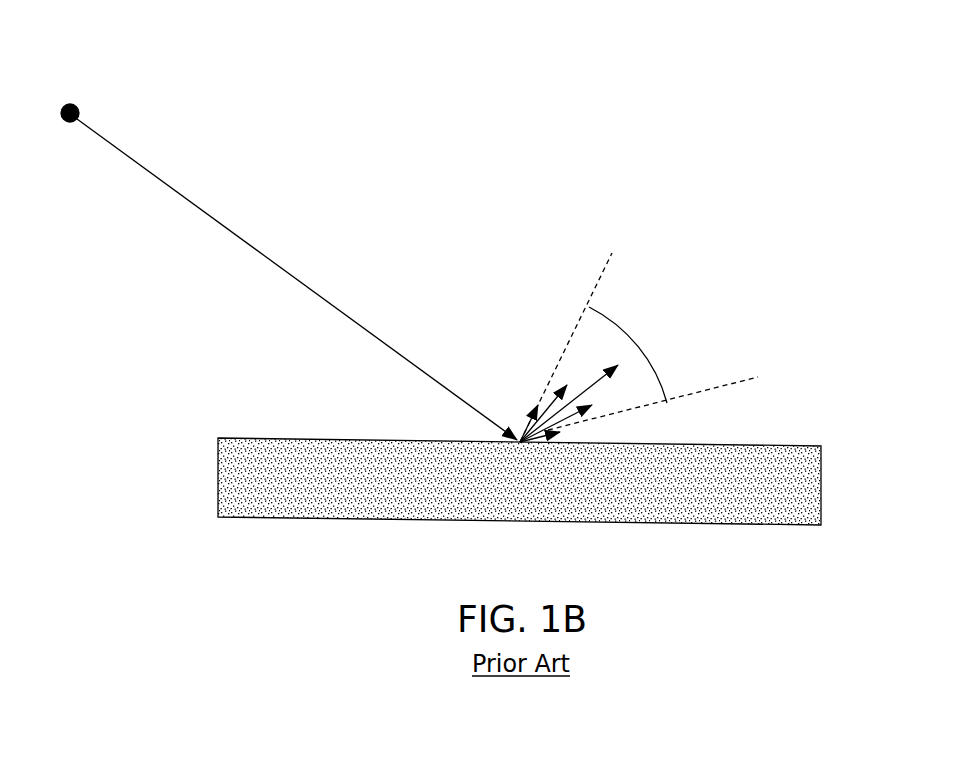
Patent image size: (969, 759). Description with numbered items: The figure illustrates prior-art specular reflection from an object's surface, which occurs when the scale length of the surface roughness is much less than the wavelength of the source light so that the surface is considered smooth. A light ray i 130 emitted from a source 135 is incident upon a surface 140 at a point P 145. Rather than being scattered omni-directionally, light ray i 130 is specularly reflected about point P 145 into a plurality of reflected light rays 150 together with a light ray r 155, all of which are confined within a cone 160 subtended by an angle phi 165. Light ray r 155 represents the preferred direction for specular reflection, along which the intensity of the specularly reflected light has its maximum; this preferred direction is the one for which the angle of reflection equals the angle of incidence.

The light ray i 130 is at (320, 290).
The source 135 is at (79, 111).
The surface 140 is at (800, 445).
The point P 145 is at (522, 443).
The light rays r1, r2, r3, r4 150 is at (555, 398).
The light ray r 155 is at (594, 378).
The cone 160 is at (598, 277).
The angle phi 165 is at (617, 318).